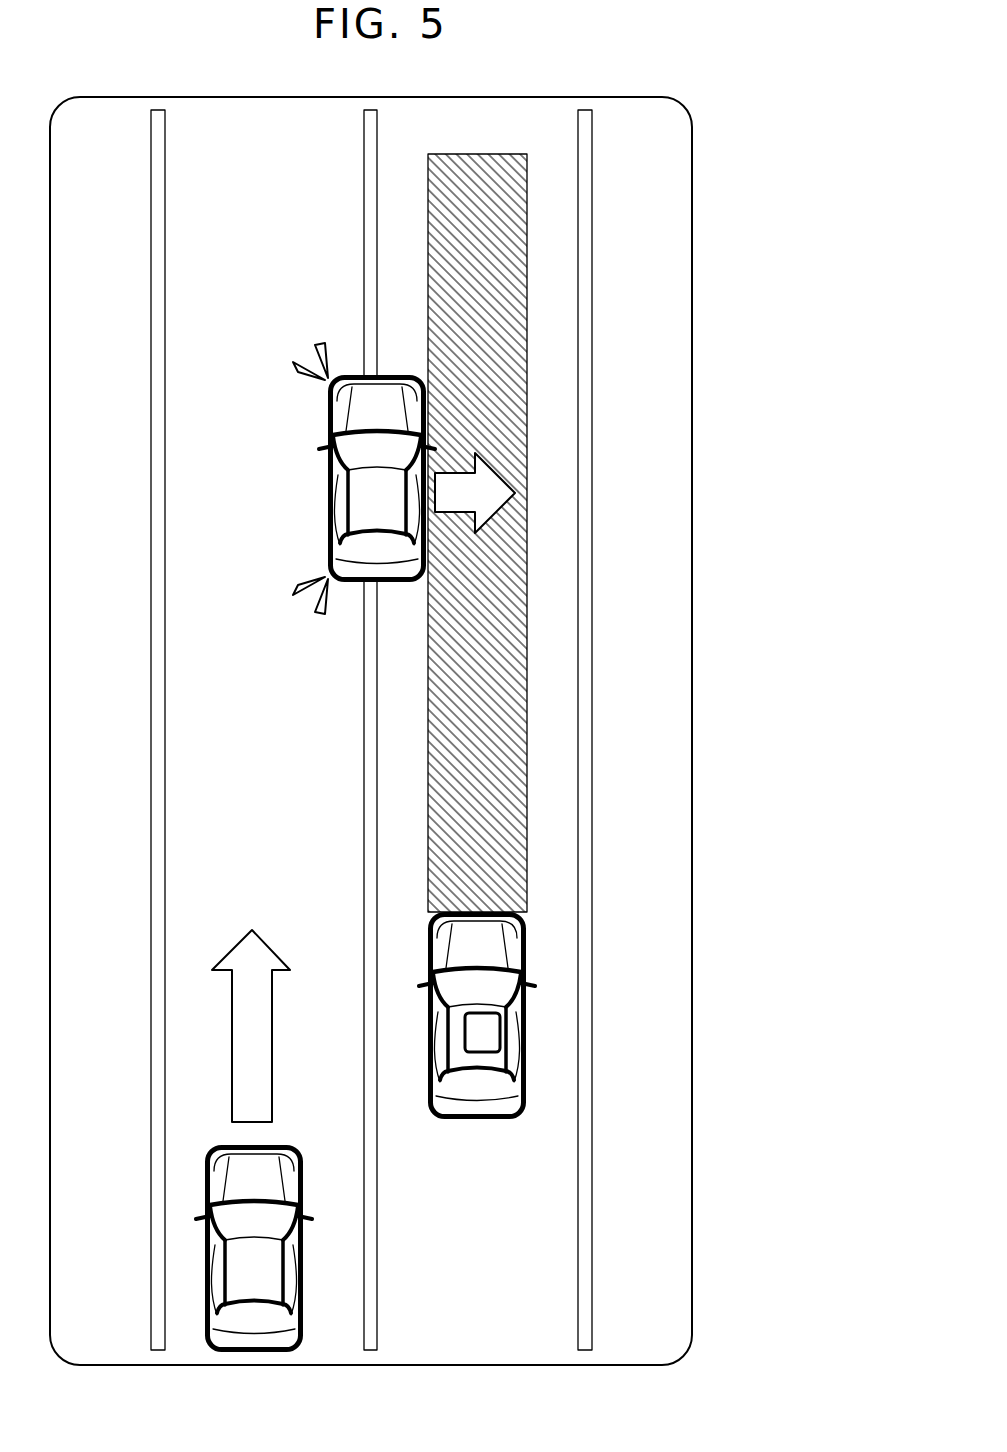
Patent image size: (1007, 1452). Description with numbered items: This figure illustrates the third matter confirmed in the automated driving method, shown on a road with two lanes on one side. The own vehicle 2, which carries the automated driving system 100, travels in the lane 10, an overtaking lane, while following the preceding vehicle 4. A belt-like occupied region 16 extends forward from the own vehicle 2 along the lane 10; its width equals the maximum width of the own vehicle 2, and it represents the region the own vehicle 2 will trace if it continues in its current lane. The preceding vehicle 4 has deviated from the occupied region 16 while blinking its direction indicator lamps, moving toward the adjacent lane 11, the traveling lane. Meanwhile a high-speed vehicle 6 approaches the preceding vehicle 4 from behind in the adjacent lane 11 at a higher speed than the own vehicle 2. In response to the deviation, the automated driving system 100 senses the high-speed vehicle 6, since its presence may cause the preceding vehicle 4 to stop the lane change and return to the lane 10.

The own vehicle 2 is at (530, 1025).
The preceding vehicle 4 is at (328, 492).
The high-speed vehicle 6 is at (205, 1262).
The lane 10 is at (478, 145).
The lane 11 is at (265, 143).
The occupied region 16 is at (527, 722).
The automated driving system 100 is at (482, 1054).